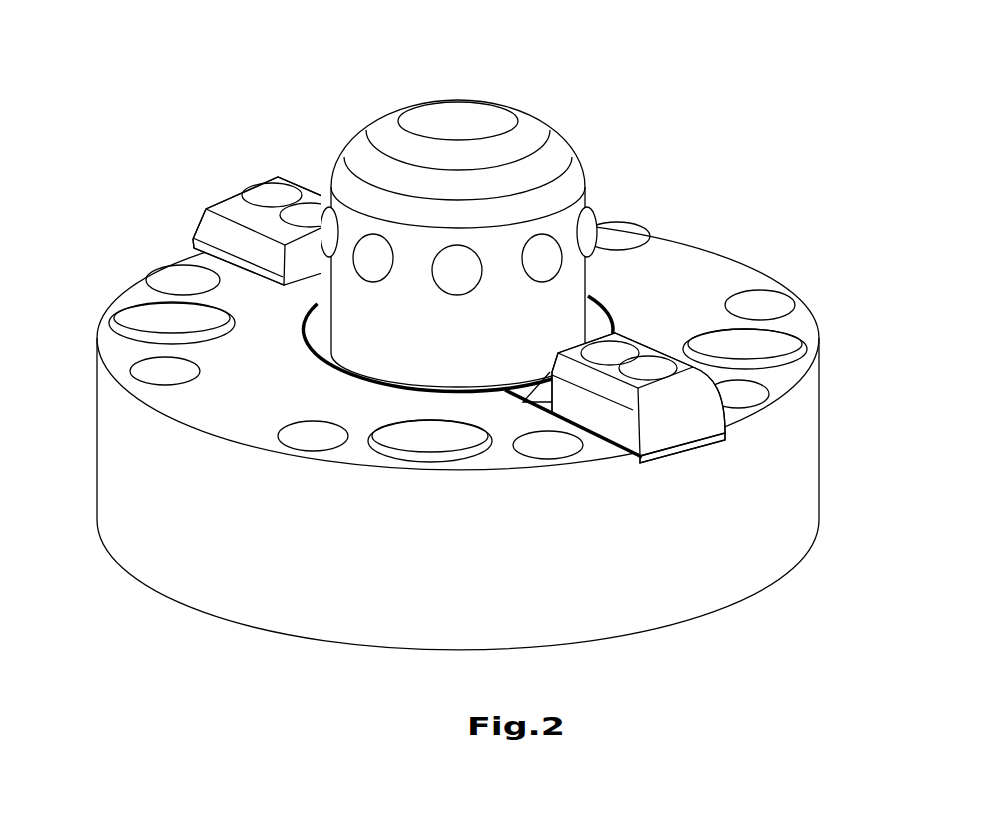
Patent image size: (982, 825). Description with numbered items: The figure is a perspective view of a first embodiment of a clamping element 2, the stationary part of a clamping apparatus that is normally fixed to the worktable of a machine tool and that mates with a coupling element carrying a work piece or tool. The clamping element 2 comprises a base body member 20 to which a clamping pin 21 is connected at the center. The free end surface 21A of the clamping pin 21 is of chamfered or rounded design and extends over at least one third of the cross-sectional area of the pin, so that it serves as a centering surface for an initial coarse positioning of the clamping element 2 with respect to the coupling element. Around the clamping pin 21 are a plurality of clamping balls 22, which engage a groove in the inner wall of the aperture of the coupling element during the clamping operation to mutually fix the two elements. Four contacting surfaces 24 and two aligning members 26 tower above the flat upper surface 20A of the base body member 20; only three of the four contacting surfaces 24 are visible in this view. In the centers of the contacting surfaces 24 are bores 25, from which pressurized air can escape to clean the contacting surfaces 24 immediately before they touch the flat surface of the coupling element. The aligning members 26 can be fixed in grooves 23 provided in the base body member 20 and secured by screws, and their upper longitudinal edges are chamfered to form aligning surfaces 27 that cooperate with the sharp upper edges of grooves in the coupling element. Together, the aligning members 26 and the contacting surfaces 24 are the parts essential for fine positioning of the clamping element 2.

The clamping element 2 is at (692, 162).
The base body member 20 is at (217, 578).
The flat upper surface 20A is at (692, 260).
The clamping pin 21 is at (468, 122).
The free end surface 21A is at (357, 130).
The clamping balls 22 is at (540, 268).
The grooves 23 is at (314, 304).
The contacting surfaces 24 is at (137, 317).
The bores 25 is at (170, 313).
The aligning members 26 is at (245, 182).
The aligning surfaces 27 is at (227, 207).